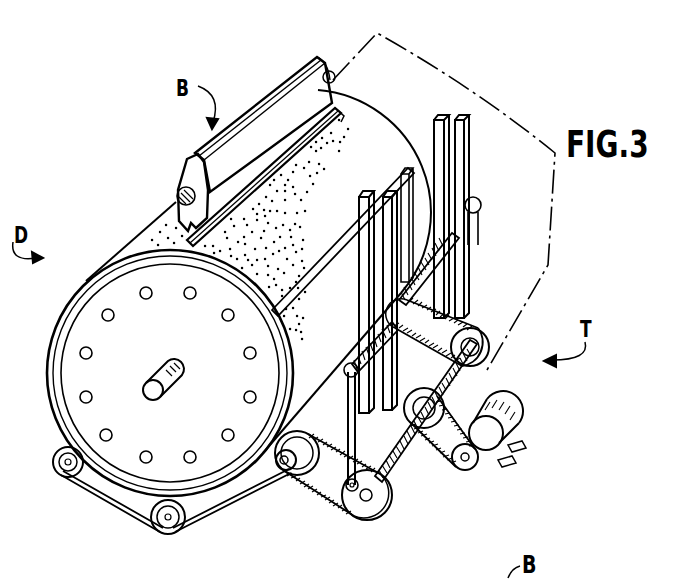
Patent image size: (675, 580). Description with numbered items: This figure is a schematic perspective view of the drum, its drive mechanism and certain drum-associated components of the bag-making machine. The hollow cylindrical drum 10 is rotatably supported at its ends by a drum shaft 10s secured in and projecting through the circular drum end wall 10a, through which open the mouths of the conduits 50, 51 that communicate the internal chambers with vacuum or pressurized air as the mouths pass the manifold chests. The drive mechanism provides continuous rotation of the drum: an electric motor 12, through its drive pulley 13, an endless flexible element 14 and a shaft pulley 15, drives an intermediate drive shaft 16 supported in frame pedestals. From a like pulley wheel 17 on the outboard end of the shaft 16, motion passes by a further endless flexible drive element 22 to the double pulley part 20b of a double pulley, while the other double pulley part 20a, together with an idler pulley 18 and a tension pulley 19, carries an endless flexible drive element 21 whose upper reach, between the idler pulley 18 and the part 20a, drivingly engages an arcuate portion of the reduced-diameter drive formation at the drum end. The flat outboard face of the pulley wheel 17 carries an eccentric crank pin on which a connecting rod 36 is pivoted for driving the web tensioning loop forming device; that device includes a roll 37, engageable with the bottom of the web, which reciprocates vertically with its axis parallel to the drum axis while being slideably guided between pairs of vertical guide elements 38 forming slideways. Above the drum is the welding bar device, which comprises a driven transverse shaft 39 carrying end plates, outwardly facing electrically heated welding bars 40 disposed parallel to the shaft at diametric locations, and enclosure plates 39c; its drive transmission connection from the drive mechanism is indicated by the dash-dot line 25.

The drum 10 is at (121, 244).
The drum end wall 10a is at (184, 429).
The drum shaft 10s is at (146, 384).
The electric motor 12 is at (512, 413).
The drive pulley 13 is at (468, 460).
The endless flexible element 14 is at (441, 456).
The shaft pulley 15 is at (438, 405).
The intermediate drive shaft 16 is at (400, 458).
The pulley wheel 17 is at (360, 510).
The idler pulley 18 is at (60, 450).
The tension pulley 19 is at (168, 535).
The double pulley part 20a is at (304, 436).
The double pulley part 20b is at (279, 452).
The endless flexible drive element 21 is at (242, 506).
The endless flexible drive element 22 is at (478, 317).
The dash-dot line 25 is at (500, 107).
The connecting rod 36 is at (354, 474).
The roll 37 is at (450, 247).
The vertical guide elements 38 is at (457, 150).
The driven transverse shaft 39 is at (180, 191).
The enclosure plates 39c is at (252, 162).
The welding bar 40 is at (298, 63).
The conduit 50 is at (92, 354).
The conduit 51 is at (188, 300).